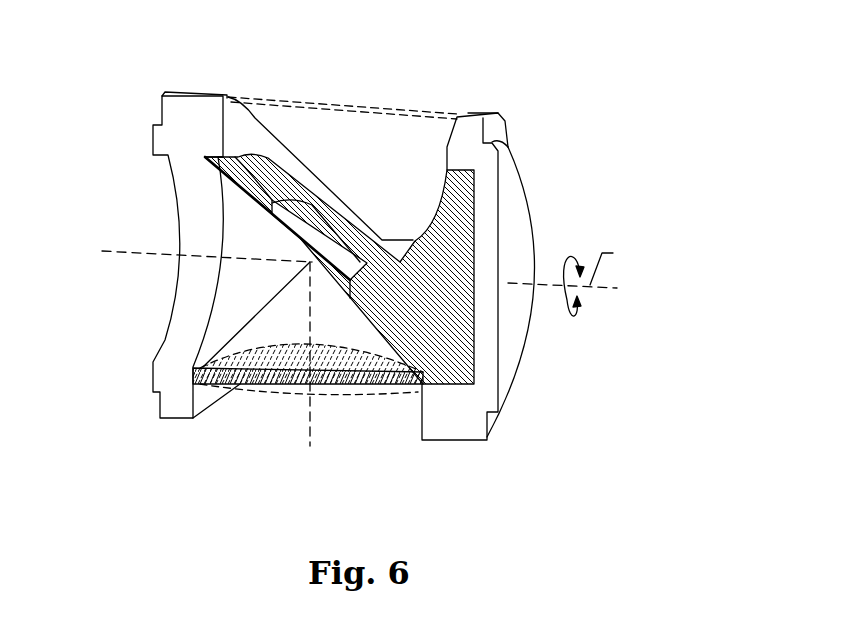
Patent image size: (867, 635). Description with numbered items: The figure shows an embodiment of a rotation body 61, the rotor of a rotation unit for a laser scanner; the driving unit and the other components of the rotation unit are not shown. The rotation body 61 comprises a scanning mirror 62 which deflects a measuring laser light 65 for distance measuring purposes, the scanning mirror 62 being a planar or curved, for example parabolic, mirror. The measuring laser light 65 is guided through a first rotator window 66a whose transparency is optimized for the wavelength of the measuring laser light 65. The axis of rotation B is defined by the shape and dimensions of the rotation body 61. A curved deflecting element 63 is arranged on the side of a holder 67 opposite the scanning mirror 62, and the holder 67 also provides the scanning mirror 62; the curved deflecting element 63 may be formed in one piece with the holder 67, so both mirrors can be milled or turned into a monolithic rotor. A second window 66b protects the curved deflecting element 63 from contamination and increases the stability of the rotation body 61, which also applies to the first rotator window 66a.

The rotation body 61 is at (500, 55).
The scanning mirror 62 is at (310, 260).
The curved deflecting element 63 is at (322, 237).
The measuring laser light 65 is at (137, 253).
The first rotator window 66a is at (265, 387).
The second window 66b is at (350, 107).
The holder 67 is at (350, 300).